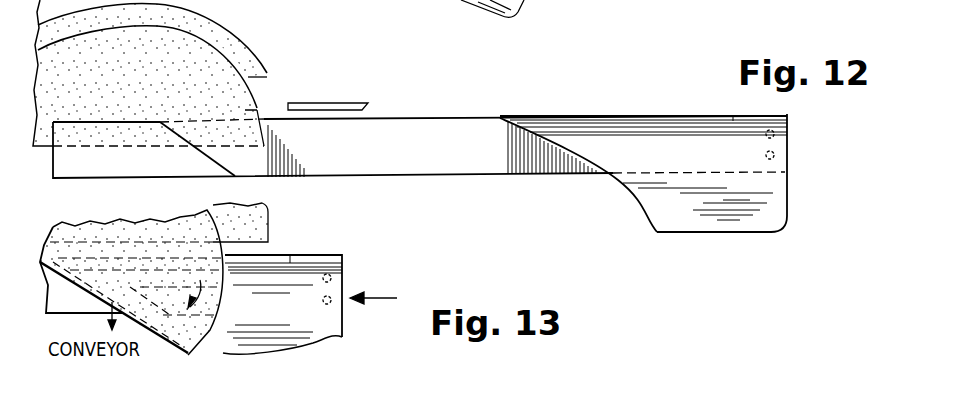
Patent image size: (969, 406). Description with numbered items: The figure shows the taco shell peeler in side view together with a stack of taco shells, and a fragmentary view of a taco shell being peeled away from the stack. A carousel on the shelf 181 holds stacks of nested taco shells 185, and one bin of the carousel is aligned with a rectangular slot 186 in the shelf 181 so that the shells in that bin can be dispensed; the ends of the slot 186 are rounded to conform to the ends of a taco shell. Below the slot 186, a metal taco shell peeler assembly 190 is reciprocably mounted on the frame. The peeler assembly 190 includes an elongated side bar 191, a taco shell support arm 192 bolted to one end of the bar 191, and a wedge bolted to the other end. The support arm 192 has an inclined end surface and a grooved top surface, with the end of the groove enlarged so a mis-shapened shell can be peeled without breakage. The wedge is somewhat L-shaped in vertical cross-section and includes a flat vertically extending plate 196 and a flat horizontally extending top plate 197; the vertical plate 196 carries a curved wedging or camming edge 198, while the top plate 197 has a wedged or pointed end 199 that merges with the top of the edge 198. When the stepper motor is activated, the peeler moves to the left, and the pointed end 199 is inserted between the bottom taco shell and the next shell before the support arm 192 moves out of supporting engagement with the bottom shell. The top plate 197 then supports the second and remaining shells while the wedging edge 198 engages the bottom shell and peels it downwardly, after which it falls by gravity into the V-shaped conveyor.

In FIG. 12, the shelf 181 is at (338, 101).
In FIG. 13, the nested taco shells 185 is at (215, 287).
In FIG. 12, the rectangular slot 186 is at (275, 100).
In FIG. 12, the taco shell peeler assembly 190 is at (438, 184).
In FIG. 12, the elongated side bar 191 is at (371, 158).
In FIG. 12, the taco shell support arm 192 is at (153, 167).
In FIG. 12, the vertically extending plate 196 is at (773, 211).
In FIG. 13, the vertically extending plate 196 is at (342, 331).
In FIG. 12, the horizontally extending top plate 197 is at (640, 114).
In FIG. 12, the curved wedging or camming edge 198 is at (623, 184).
In FIG. 13, the curved wedging or camming edge 198 is at (120, 291).
In FIG. 12, the wedged or pointed end 199 is at (520, 118).